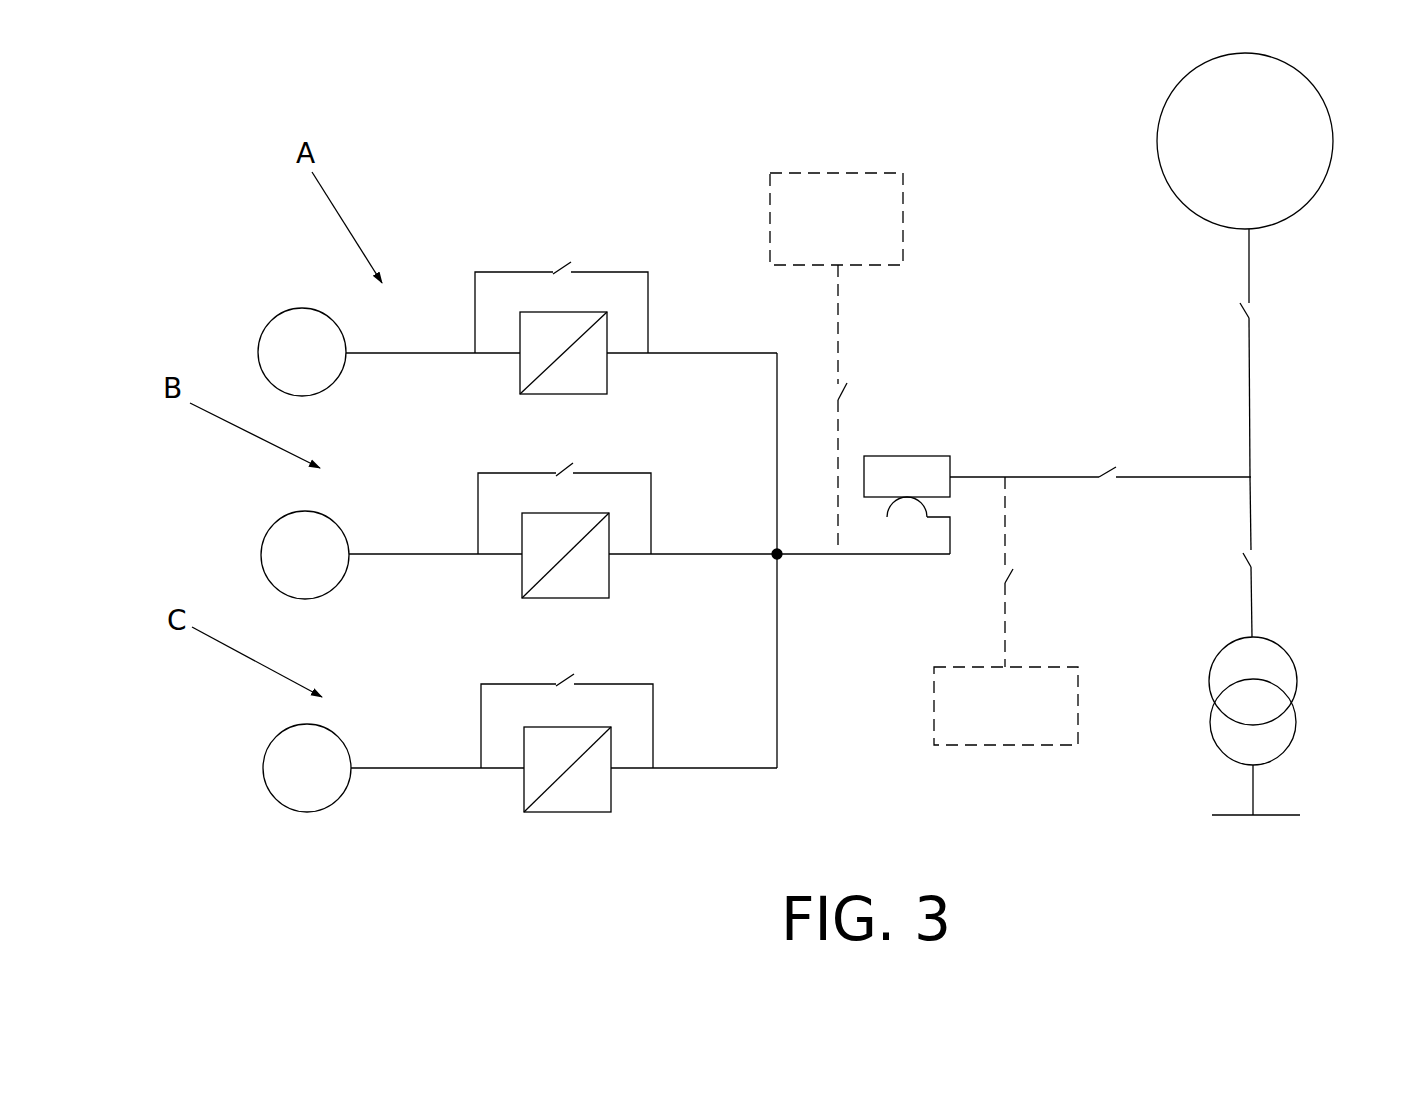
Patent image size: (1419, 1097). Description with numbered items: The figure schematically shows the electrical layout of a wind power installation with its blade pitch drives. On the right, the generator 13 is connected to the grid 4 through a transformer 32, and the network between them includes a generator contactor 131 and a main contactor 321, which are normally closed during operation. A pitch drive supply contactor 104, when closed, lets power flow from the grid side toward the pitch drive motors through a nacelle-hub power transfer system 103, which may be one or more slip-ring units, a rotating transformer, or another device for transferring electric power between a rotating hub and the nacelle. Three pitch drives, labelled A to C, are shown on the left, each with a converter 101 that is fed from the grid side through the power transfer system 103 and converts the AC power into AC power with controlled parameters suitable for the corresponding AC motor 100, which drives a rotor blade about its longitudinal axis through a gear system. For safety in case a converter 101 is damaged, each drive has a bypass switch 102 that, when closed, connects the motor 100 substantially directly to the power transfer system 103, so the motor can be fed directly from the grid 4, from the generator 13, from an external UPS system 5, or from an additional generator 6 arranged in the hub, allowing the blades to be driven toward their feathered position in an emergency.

The AC motor 100 is at (280, 340).
The converter 101 is at (527, 370).
The bypass switch 102 is at (560, 262).
The nacelle-hub power transfer system 103 is at (920, 462).
The pitch drive supply contactor 104 is at (1105, 471).
The external UPS system 5 is at (1005, 730).
The additional generator 6 is at (812, 210).
The generator 13 is at (1178, 144).
The generator contactor 131 is at (1240, 312).
The main contactor 321 is at (1243, 562).
The transformer 32 is at (1277, 666).
The grid 4 is at (1280, 815).